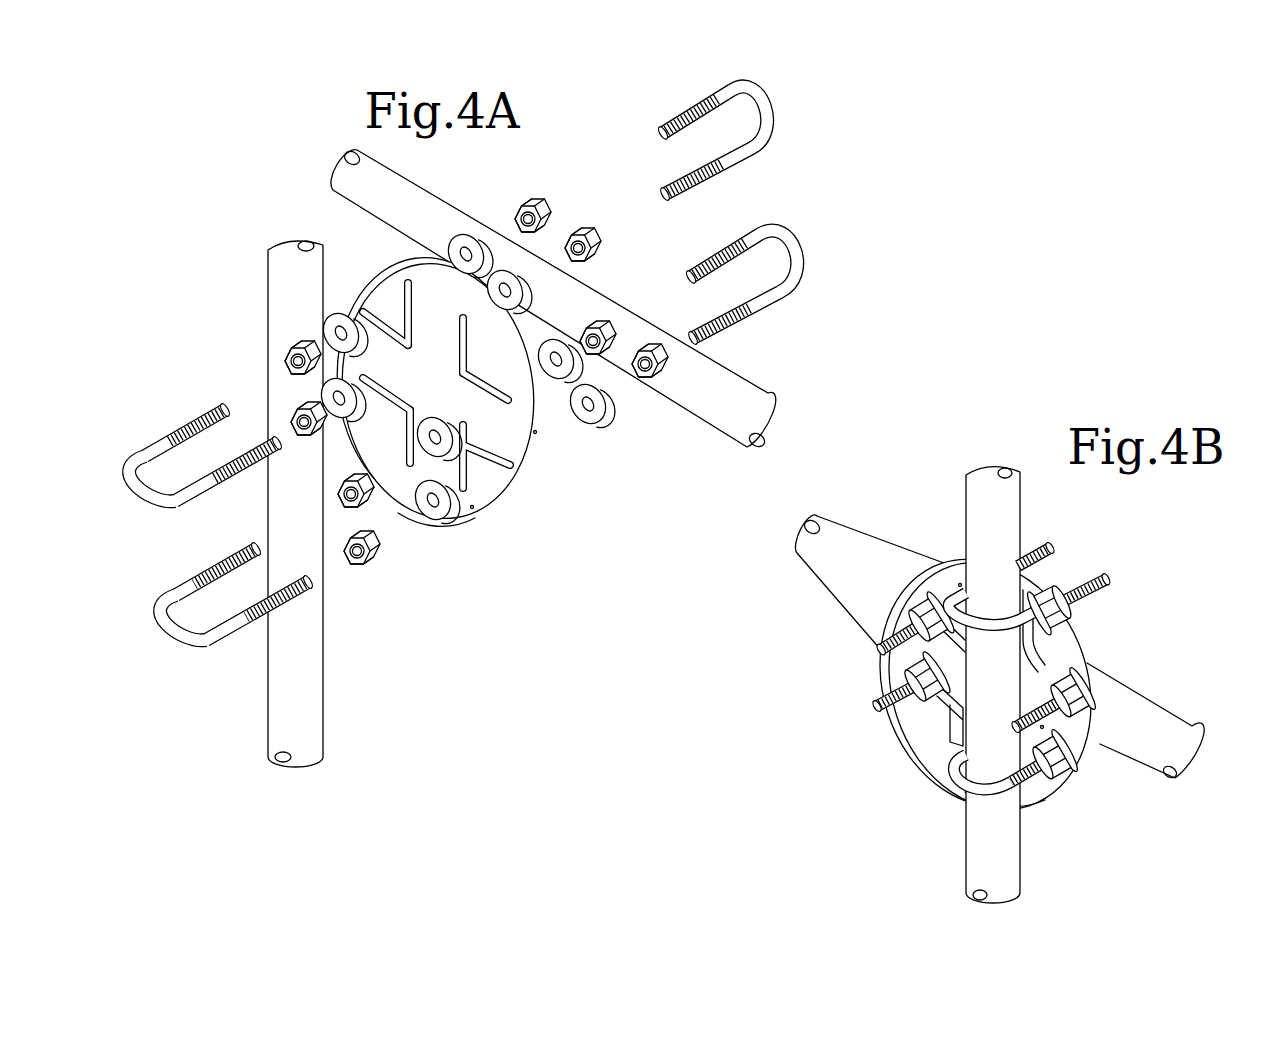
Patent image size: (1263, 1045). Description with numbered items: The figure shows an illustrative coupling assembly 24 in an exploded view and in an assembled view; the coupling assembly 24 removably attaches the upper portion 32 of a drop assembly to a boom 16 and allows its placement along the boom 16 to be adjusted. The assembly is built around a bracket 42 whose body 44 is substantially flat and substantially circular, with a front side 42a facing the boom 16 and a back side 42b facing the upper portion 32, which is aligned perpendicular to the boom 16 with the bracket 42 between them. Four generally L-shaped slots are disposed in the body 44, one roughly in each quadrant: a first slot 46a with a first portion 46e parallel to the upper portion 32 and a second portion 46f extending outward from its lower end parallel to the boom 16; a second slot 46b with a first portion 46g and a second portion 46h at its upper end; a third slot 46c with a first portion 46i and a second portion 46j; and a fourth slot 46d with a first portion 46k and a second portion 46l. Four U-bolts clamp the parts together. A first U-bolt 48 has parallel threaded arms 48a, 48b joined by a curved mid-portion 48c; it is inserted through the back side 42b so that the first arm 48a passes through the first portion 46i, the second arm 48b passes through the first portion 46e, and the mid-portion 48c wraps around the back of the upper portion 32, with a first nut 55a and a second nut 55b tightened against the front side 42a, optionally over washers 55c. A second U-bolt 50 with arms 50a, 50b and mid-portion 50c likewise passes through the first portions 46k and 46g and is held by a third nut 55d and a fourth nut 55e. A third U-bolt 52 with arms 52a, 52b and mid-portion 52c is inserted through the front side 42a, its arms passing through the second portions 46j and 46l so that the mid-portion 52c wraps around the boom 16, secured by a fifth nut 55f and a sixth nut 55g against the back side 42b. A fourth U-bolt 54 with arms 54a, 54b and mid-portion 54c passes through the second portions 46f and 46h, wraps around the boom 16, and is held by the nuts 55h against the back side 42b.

In FIG. 4A, the boom 16 is at (748, 382).
In FIG. 4B, the boom 16 is at (1133, 690).
In FIG. 4A, the coupling assembly 24 is at (426, 362).
In FIG. 4B, the coupling assembly 24 is at (1033, 682).
In FIG. 4A, the upper portion of the drop assembly 32 is at (325, 718).
In FIG. 4B, the upper portion of the drop assembly 32 is at (1023, 873).
In FIG. 4A, the bracket 42 is at (463, 393).
In FIG. 4B, the bracket 42 is at (1072, 808).
In FIG. 4A, the front side of the bracket 42a is at (545, 450).
In FIG. 4A, the back side of the bracket 42b is at (458, 527).
In FIG. 4A, the body of the bracket 44 is at (512, 466).
In FIG. 4B, the body of the bracket 44 is at (1040, 810).
In FIG. 4A, the first slot 46a is at (484, 368).
In FIG. 4B, the first slot 46a is at (1037, 648).
In FIG. 4A, the second slot 46b is at (518, 473).
In FIG. 4B, the second slot 46b is at (1044, 727).
In FIG. 4A, the third slot 46c is at (372, 262).
In FIG. 4B, the third slot 46c is at (959, 582).
In FIG. 4A, the fourth slot 46d is at (402, 420).
In FIG. 4B, the fourth slot 46d is at (951, 714).
In FIG. 4A, the first portion of the first slot 46e is at (478, 330).
In FIG. 4A, the second portion of the first slot 46f is at (536, 432).
In FIG. 4A, the first portion of the second slot 46g is at (472, 507).
In FIG. 4A, the second portion of the second slot 46h is at (478, 466).
In FIG. 4A, the first portion of the third slot 46i is at (383, 318).
In FIG. 4A, the second portion of the third slot 46j is at (348, 312).
In FIG. 4A, the first portion of the fourth slot 46k is at (372, 376).
In FIG. 4A, the second portion of the fourth slot 46l is at (432, 509).
In FIG. 4A, the first U-bolt 48 is at (198, 442).
In FIG. 4A, the first arm of the first U-bolt 48a is at (221, 400).
In FIG. 4B, the first arm of the first U-bolt 48a is at (1052, 553).
In FIG. 4A, the second arm of the first U-bolt 48b is at (262, 466).
In FIG. 4B, the second arm of the first U-bolt 48b is at (1108, 574).
In FIG. 4A, the curved mid-portion of the first U-bolt 48c is at (132, 506).
In FIG. 4B, the curved mid-portion of the first U-bolt 48c is at (982, 614).
In FIG. 4A, the second U-bolt 50 is at (248, 627).
In FIG. 4A, the first arm of the second U-bolt 50a is at (248, 550).
In FIG. 4A, the second arm of the second U-bolt 50b is at (298, 600).
In FIG. 4A, the curved mid-portion of the second U-bolt 50c is at (176, 645).
In FIG. 4B, the curved mid-portion of the second U-bolt 50c is at (958, 792).
In FIG. 4A, the third U-bolt 52 is at (751, 139).
In FIG. 4A, the first arm of the third U-bolt 52a is at (657, 128).
In FIG. 4B, the first arm of the third U-bolt 52a is at (875, 646).
In FIG. 4A, the second arm of the third U-bolt 52b is at (688, 194).
In FIG. 4B, the second arm of the third U-bolt 52b is at (873, 703).
In FIG. 4A, the curved mid-portion of the third U-bolt 52c is at (772, 112).
In FIG. 4A, the fourth U-bolt 54 is at (791, 271).
In FIG. 4A, the first arm of the fourth U-bolt 54a is at (688, 271).
In FIG. 4B, the first arm of the fourth U-bolt 54a is at (1012, 723).
In FIG. 4A, the second arm of the fourth U-bolt 54b is at (710, 338).
In FIG. 4B, the second arm of the fourth U-bolt 54b is at (1013, 792).
In FIG. 4A, the curved mid-portion of the fourth U-bolt 54c is at (801, 223).
In FIG. 4A, the first nut 55a is at (538, 197).
In FIG. 4A, the second nut 55b is at (590, 228).
In FIG. 4A, the washers 55c is at (503, 272).
In FIG. 4A, the third nut 55d is at (612, 325).
In FIG. 4A, the fourth nut 55e is at (667, 368).
In FIG. 4A, the fifth nut 55f is at (292, 345).
In FIG. 4A, the sixth nut 55g is at (297, 405).
In FIG. 4A, the seventh and eighth nuts 55h is at (357, 502).